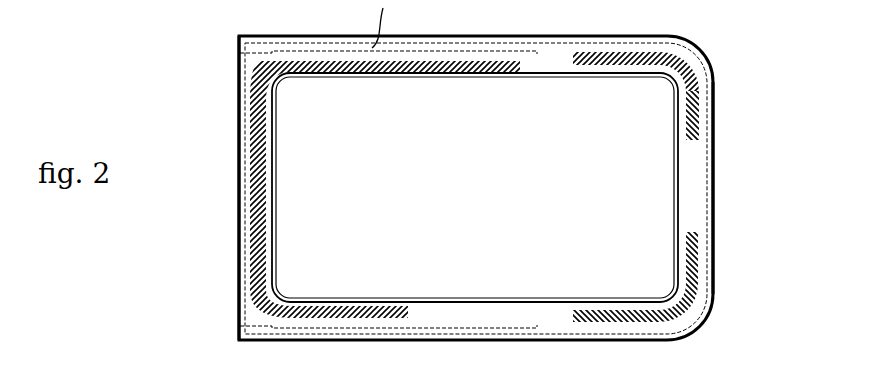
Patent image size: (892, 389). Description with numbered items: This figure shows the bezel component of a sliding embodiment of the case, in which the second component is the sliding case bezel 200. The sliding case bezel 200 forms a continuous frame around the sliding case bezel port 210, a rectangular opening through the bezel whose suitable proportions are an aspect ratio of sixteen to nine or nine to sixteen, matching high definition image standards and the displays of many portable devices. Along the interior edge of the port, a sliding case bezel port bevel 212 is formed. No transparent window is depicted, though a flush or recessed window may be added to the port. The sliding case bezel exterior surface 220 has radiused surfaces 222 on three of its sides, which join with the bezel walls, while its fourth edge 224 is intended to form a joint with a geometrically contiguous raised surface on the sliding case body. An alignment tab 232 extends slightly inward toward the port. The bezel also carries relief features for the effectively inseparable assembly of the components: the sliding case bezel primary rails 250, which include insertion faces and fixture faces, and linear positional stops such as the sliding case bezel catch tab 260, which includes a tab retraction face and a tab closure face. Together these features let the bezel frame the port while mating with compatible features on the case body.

The sliding case bezel 200 is at (240, 36).
The sliding case bezel port 210 is at (276, 120).
The sliding case bezel port bevel 212 is at (276, 165).
The sliding case bezel exterior surface 220 is at (706, 236).
The radiused surfaces 222 is at (556, 50).
The fourth edge 224 is at (239, 185).
The alignment tab 232 is at (712, 160).
The sliding case bezel primary rails 250 is at (318, 331).
The sliding case bezel catch tab 260 is at (246, 50).